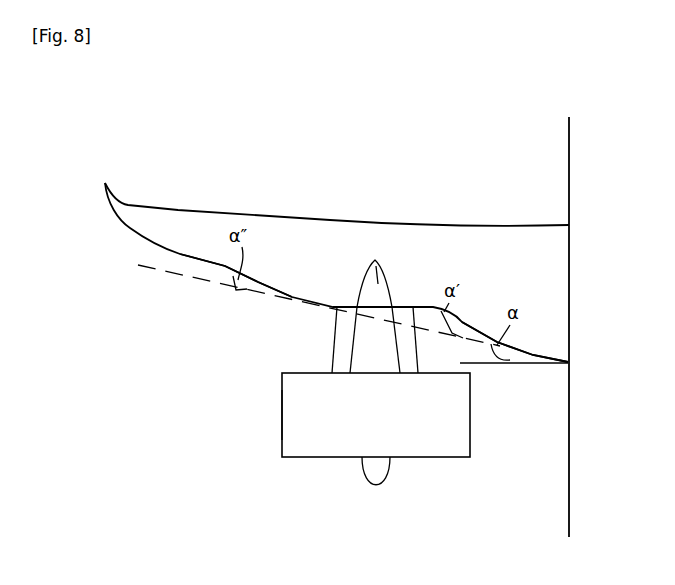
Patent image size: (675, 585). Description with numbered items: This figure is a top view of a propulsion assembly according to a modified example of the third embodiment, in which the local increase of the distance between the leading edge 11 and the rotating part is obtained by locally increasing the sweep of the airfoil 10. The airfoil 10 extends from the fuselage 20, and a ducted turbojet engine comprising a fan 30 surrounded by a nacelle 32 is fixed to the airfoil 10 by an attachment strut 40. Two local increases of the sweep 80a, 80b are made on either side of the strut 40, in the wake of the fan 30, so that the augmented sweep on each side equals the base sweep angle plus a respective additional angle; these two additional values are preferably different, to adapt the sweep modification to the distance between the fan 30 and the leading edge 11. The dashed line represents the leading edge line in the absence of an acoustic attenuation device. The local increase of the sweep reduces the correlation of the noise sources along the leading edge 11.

The airfoil 10 is at (200, 233).
The leading edge 11 is at (163, 248).
The fuselage 20 is at (548, 505).
The fan 30 is at (303, 458).
The nacelle 32 is at (294, 417).
The attachment strut 40 is at (375, 260).
The local increase of the sweep 80a is at (211, 321).
The local increase of the sweep 80b is at (505, 391).